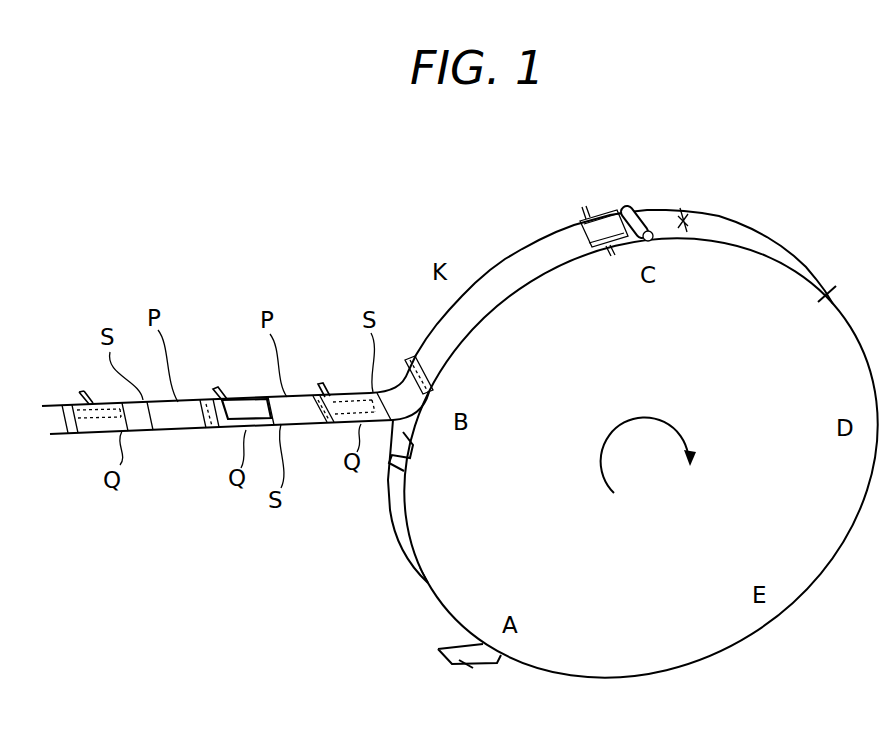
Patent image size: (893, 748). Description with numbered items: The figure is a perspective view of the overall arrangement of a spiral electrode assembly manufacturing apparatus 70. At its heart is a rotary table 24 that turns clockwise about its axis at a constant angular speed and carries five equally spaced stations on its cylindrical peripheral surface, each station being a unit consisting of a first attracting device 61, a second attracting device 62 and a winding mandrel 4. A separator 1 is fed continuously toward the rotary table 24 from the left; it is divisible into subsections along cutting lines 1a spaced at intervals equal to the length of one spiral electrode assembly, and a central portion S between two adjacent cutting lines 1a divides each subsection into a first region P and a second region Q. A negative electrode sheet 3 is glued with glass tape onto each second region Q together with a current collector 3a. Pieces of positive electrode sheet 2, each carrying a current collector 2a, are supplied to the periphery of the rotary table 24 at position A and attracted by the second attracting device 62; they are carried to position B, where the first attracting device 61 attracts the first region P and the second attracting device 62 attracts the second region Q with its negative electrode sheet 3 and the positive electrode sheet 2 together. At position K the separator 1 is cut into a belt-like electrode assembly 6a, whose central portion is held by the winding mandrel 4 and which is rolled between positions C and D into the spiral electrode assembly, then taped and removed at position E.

The separator 1 is at (52, 403).
The cutting lines 1a is at (217, 430).
The positive electrode sheet 2 is at (390, 465).
The current collector 2a is at (472, 665).
The negative electrode sheet 3 is at (240, 400).
The current collector 3a is at (80, 394).
The winding mandrel 4 is at (655, 242).
The belt-like electrode assembly 6a is at (690, 213).
The rotary table 24 is at (822, 293).
The first attracting device 61 is at (658, 208).
The second attracting device 62 is at (598, 211).
The spiral electrode assembly manufacturing apparatus 70 is at (768, 234).